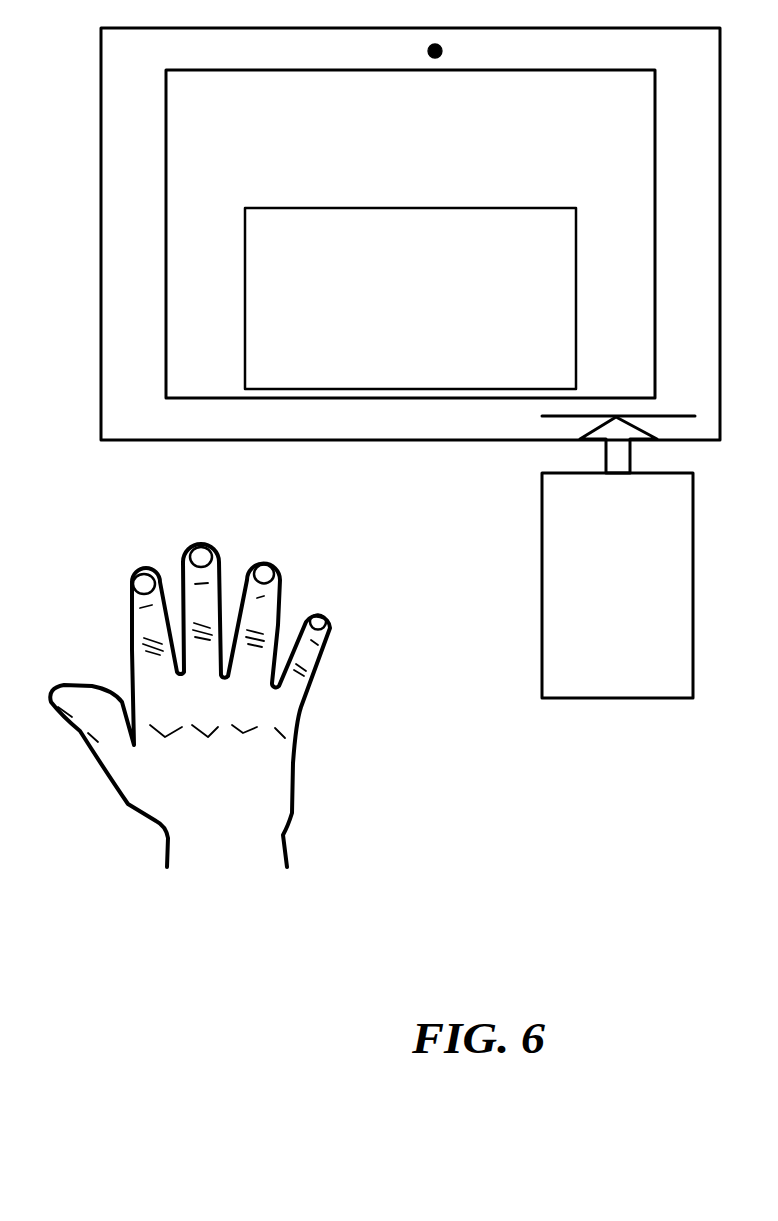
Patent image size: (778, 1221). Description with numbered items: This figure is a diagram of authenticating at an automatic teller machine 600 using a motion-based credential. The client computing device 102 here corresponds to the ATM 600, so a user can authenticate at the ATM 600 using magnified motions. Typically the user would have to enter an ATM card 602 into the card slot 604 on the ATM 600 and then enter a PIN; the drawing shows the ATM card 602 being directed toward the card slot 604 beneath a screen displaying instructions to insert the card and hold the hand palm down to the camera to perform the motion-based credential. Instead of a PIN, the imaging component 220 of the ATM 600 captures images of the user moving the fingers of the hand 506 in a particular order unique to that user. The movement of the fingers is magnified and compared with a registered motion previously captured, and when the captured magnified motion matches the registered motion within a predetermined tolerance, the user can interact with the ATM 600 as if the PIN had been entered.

The client computing device 102 is at (100, 66).
The imaging component 220 is at (442, 51).
The automatic teller machine (ATM) 600 is at (393, 443).
The card slot 604 is at (543, 418).
The ATM card 602 is at (541, 545).
The hand 506 is at (145, 817).